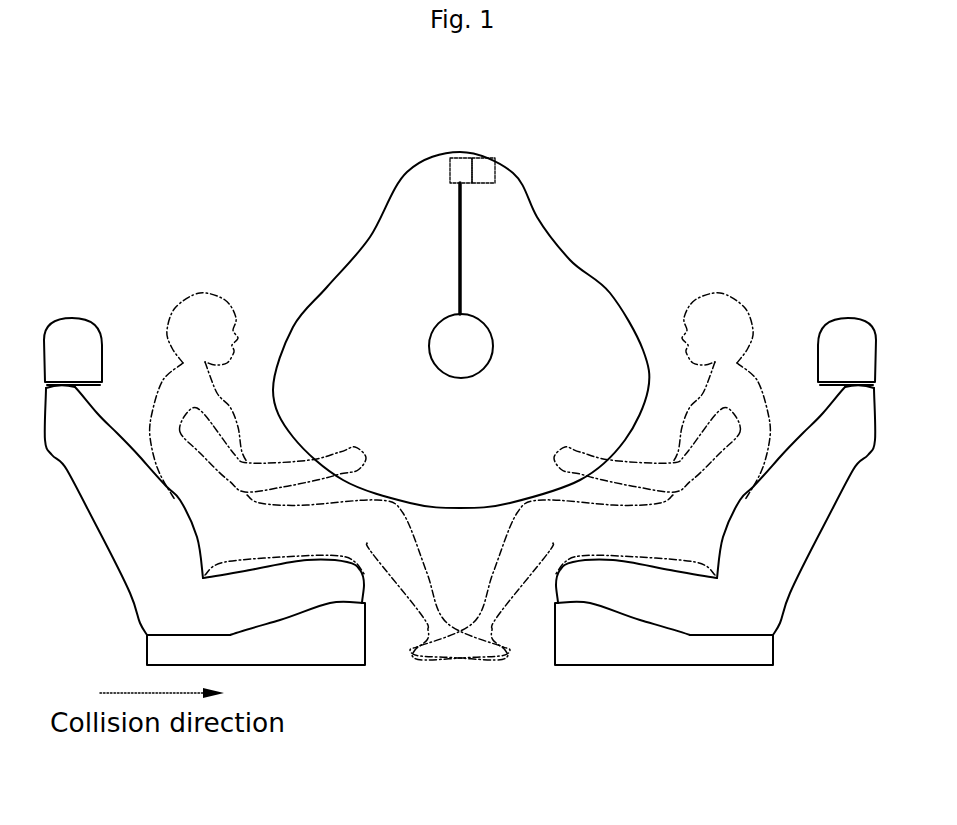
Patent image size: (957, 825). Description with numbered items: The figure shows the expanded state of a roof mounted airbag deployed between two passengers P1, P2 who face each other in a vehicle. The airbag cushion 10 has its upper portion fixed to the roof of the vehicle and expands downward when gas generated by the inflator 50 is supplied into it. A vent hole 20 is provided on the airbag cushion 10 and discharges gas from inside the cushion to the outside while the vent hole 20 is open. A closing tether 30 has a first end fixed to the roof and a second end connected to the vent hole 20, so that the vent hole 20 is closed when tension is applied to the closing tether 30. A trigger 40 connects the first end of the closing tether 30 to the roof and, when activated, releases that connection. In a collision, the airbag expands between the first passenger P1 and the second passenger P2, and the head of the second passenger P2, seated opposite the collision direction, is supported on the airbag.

The airbag cushion 10 is at (568, 263).
The vent hole 20 is at (442, 335).
The closing tether 30 is at (458, 237).
The trigger 40 is at (458, 167).
The inflator 50 is at (488, 167).
The first passenger P1 is at (175, 302).
The second passenger P2 is at (742, 300).